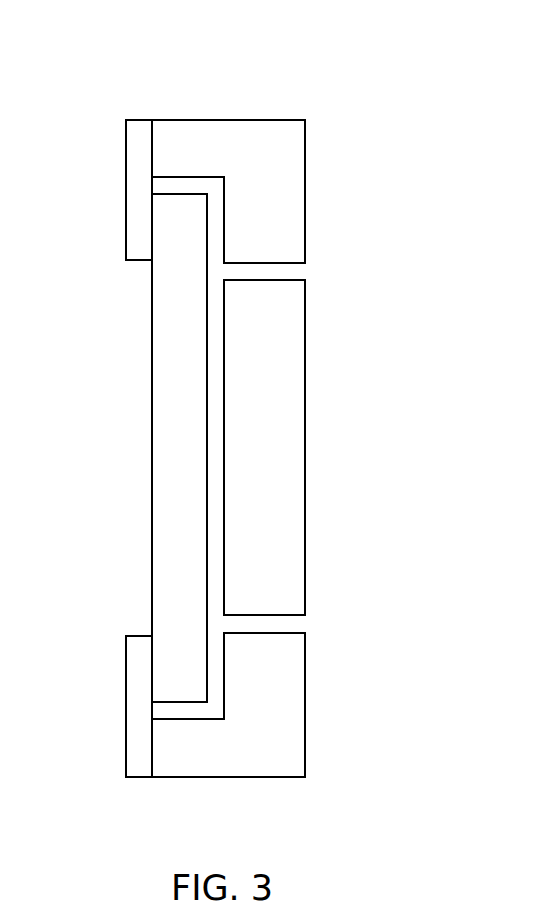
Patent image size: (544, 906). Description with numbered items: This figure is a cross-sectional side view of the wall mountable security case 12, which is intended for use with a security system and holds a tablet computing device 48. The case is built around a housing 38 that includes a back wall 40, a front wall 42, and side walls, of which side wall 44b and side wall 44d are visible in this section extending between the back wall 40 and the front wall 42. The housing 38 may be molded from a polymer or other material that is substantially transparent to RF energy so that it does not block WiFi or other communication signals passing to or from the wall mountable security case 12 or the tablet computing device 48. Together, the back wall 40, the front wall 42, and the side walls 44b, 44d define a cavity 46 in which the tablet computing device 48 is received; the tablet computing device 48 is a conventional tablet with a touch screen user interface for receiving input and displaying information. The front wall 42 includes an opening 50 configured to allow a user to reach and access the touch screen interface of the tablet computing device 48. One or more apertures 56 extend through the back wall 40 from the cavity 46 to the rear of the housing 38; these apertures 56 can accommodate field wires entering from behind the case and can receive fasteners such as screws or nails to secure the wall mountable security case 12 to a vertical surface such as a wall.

The wall mountable security case 12 is at (413, 82).
The housing 38 is at (305, 147).
The back wall 40 is at (305, 450).
The front wall 42 is at (133, 188).
The side wall 44b is at (207, 135).
The side wall 44d is at (227, 760).
The cavity 46 is at (182, 185).
The tablet computing device 48 is at (168, 457).
The opening 50 is at (138, 331).
The apertures 56 is at (293, 270).